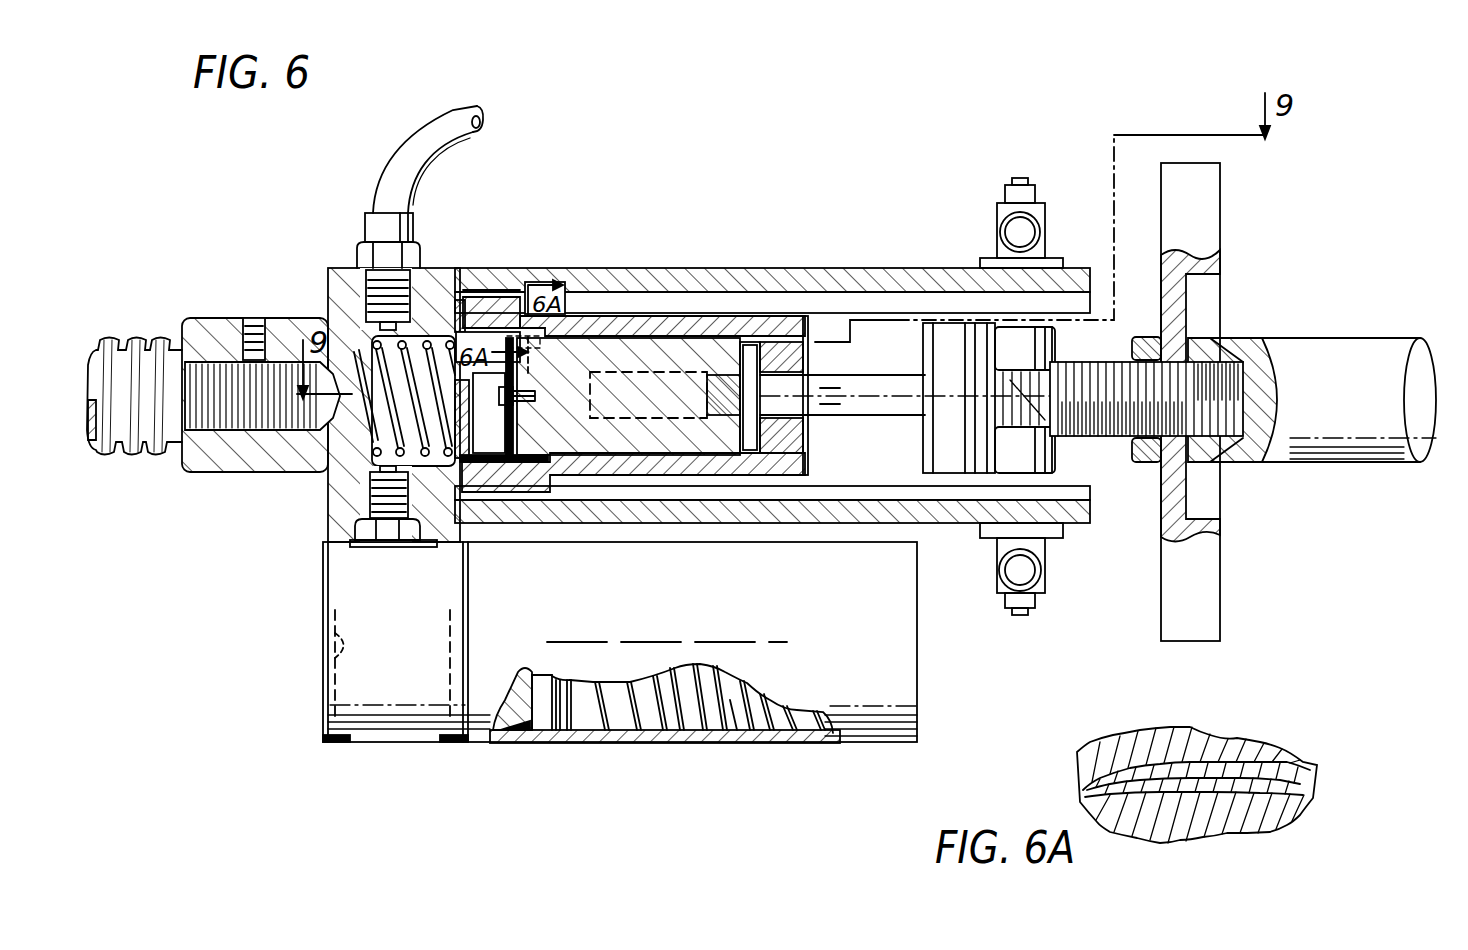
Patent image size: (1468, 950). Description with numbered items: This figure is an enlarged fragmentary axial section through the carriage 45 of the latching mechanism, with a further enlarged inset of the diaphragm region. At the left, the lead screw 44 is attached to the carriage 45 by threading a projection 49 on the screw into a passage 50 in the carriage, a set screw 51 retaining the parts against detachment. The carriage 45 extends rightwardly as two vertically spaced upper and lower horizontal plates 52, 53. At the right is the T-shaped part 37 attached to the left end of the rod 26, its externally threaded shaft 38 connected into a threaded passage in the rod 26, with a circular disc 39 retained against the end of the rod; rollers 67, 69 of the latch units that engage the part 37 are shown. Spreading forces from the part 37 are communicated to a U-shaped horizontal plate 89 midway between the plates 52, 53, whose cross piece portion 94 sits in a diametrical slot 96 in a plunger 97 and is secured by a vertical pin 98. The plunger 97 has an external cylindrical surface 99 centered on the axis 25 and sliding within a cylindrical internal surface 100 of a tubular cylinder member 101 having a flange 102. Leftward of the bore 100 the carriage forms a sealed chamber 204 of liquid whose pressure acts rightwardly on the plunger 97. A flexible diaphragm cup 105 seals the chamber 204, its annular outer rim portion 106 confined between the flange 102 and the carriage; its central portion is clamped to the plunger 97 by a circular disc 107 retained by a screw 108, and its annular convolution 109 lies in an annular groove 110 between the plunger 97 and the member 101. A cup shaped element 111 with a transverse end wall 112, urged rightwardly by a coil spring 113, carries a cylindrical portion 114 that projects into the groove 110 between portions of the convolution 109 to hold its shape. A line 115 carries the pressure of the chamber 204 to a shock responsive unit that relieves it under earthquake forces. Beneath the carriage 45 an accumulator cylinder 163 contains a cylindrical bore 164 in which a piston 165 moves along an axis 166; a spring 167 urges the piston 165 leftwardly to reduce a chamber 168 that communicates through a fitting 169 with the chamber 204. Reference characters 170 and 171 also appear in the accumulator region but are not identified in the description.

In FIG. 6, the lead screw 44 is at (130, 326).
In FIG. 6, the projection 49 is at (212, 372).
In FIG. 6, the set screw 51 is at (254, 318).
In FIG. 6, the passage 50 is at (240, 430).
In FIG. 6, the coil spring 113 is at (385, 430).
In FIG. 6, the carriage 45 is at (330, 505).
In FIG. 6, the fitting 169 is at (332, 552).
In FIG. 6, the transverse end wall 112 is at (427, 534).
In FIG. 6, the line 115 is at (382, 192).
In FIG. 6, the cup shaped element 111 is at (458, 320).
In FIG. 6A, the cup shaped element 111 is at (1322, 795).
In FIG. 6, the annular outer rim portion 106 is at (478, 300).
In FIG. 6, the flange 102 is at (514, 300).
In FIG. 6, the flexible diaphragm cup 105 is at (564, 318).
In FIG. 6A, the flexible diaphragm cup 105 is at (1233, 752).
In FIG. 6, the annular groove 110 is at (626, 330).
In FIG. 6, the external cylindrical surface 99 is at (677, 334).
In FIG. 6, the cylindrical internal surface 100 is at (686, 338).
In FIG. 6, the upper horizontal plate 52 is at (742, 272).
In FIG. 6, the tubular cylinder member 101 is at (776, 320).
In FIG. 6A, the tubular cylinder member 101 is at (1112, 752).
In FIG. 6, the T-shaped part 37 is at (948, 338).
In FIG. 6, the cross piece portion 94 is at (849, 371).
In FIG. 6, the axis 25 is at (880, 396).
In FIG. 6, the vertical pin 98 is at (800, 430).
In FIG. 6, the U-shaped horizontal plate 89 is at (862, 416).
In FIG. 6, the roller 67 is at (1055, 340).
In FIG. 6, the externally threaded shaft 38 is at (1062, 428).
In FIG. 6, the roller 69 is at (1058, 470).
In FIG. 6, the circular disc 39 is at (1211, 188).
In FIG. 6, the rod 26 is at (1331, 346).
In FIG. 6, the circular disc 107 is at (505, 447).
In FIG. 6A, the circular disc 107 is at (1249, 826).
In FIG. 6, the annular convolution 109 is at (510, 440).
In FIG. 6A, the annular convolution 109 is at (1292, 760).
In FIG. 6, the screw 108 is at (546, 472).
In FIG. 6, the plunger 97 is at (639, 448).
In FIG. 6, the diametrical slot 96 is at (712, 450).
In FIG. 6, the lower horizontal plate 53 is at (796, 508).
In FIG. 6, the cylindrical portion 114 is at (533, 345).
In FIG. 6A, the cylindrical portion 114 is at (1082, 796).
In FIG. 6, the sealed fluid chamber 204 is at (462, 550).
In FIG. 6, the wedge 170 is at (516, 700).
In FIG. 6, the end plate 171 is at (548, 682).
In FIG. 6, the axis 166 is at (706, 642).
In FIG. 6, the accumulator cylinder 163 is at (897, 638).
In FIG. 6, the piston 165 is at (556, 743).
In FIG. 6, the cylindrical bore 164 is at (621, 734).
In FIG. 6, the spring 167 is at (738, 730).
In FIG. 6, the chamber 168 is at (335, 662).